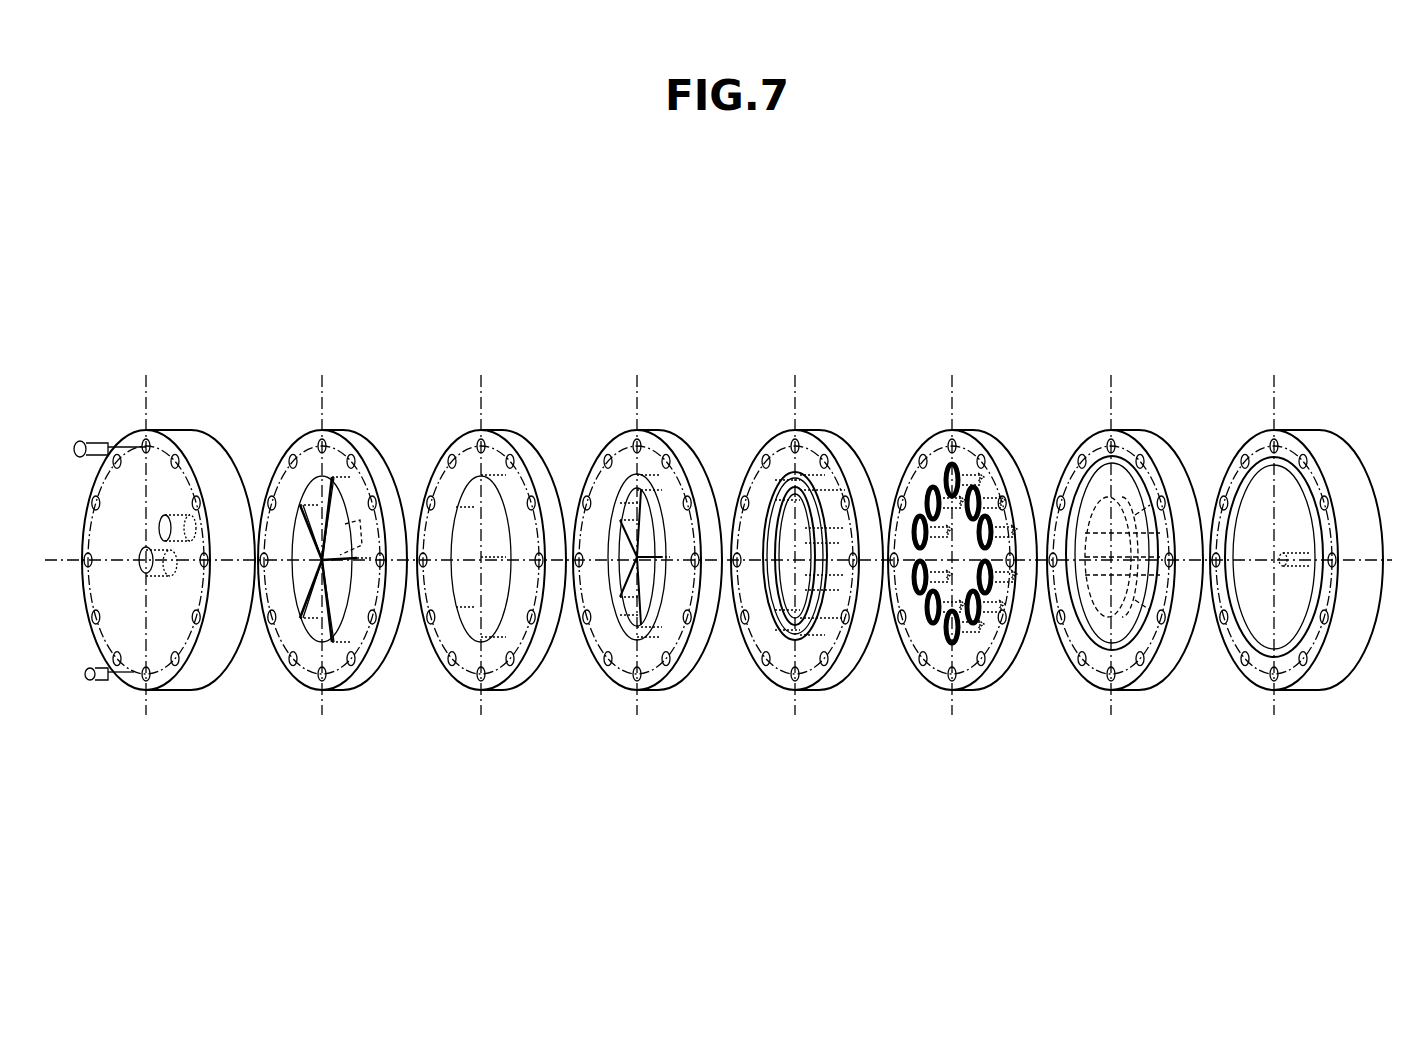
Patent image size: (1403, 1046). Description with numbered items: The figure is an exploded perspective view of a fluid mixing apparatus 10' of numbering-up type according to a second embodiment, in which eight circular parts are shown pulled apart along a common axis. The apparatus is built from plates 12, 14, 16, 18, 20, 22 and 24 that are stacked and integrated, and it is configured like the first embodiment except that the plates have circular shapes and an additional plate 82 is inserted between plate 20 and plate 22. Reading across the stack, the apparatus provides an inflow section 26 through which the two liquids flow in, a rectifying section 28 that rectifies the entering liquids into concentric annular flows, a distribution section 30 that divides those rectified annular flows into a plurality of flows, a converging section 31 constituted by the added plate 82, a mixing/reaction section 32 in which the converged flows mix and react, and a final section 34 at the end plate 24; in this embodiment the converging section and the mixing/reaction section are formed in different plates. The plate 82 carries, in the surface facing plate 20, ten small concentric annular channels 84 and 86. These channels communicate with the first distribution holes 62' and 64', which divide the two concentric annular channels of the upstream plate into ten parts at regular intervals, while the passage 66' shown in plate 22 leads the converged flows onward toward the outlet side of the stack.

The fluid mixing apparatus 10' is at (718, 501).
The plate 12 is at (170, 690).
The plate 14 is at (338, 690).
The plate 16 is at (495, 690).
The plate 18 is at (650, 690).
The plate 20 is at (810, 690).
The plate 22 is at (1127, 690).
The plate 24 is at (1298, 690).
The inflow section 26 is at (161, 359).
The rectifying section 28 is at (270, 363).
The distribution section 30 is at (808, 359).
The converging section 31 is at (964, 359).
The mixing/reaction section 32 is at (1129, 359).
The end cover section 34 is at (1291, 359).
The first distribution holes 62' is at (832, 595).
The first distribution holes 64' is at (770, 577).
The outlet passage 66' is at (1124, 498).
The plate 82 is at (968, 690).
The small concentric annular channels 84 is at (987, 628).
The small concentric annular channels 86 is at (957, 600).